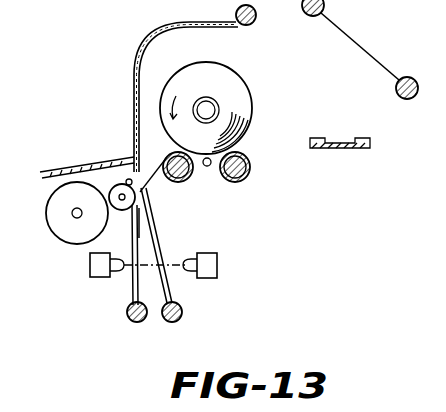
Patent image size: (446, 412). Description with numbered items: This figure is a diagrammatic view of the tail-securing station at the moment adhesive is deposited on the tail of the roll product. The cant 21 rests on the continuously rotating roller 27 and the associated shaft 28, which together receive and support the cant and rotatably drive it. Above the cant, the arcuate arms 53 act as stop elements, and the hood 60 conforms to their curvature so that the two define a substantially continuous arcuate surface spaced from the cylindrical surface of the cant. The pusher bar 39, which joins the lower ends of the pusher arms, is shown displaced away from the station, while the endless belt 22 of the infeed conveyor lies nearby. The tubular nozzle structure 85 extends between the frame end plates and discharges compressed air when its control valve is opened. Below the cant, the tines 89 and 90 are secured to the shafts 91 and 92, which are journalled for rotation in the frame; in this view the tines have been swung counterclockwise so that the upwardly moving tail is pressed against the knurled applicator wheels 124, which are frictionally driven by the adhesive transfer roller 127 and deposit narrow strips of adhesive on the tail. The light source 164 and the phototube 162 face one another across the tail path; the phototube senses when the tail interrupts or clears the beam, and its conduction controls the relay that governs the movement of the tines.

The cant 21 is at (232, 52).
The arcuate arms 53 is at (152, 52).
The tubular nozzle structure 85 is at (262, 46).
The pusher bar 39 is at (418, 78).
The endless belt 22 is at (320, 149).
The hood 60 is at (133, 131).
The applicator wheels 124 is at (119, 185).
The adhesive transfer roller 127 is at (79, 244).
The roller 27 is at (178, 181).
The shaft 28 is at (235, 182).
The tines 89 is at (130, 290).
The tines 90 is at (160, 243).
The shaft 91 is at (128, 312).
The shaft 92 is at (178, 316).
The light source 164 is at (98, 279).
The phototube 162 is at (205, 280).